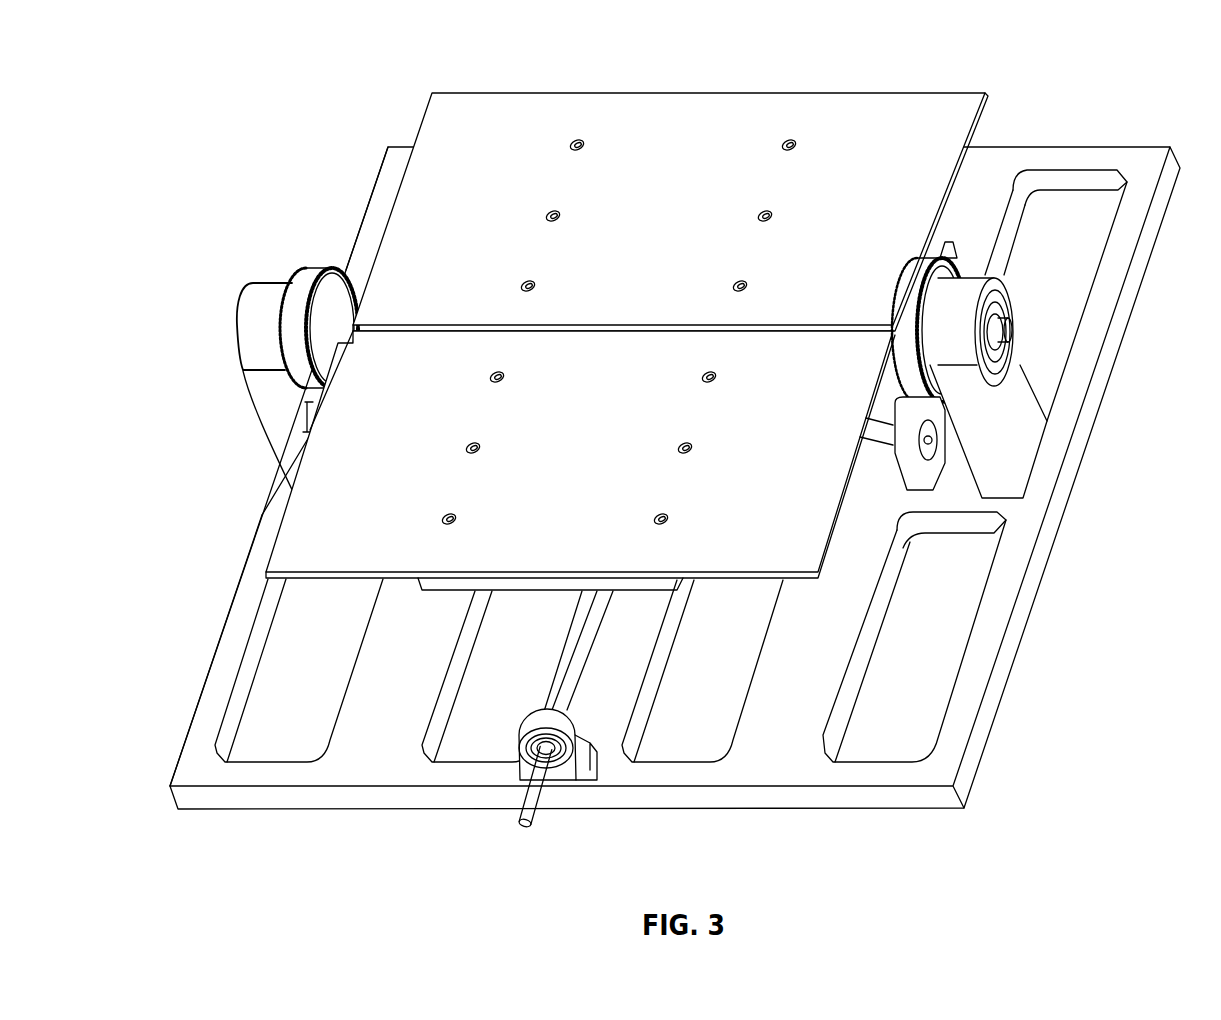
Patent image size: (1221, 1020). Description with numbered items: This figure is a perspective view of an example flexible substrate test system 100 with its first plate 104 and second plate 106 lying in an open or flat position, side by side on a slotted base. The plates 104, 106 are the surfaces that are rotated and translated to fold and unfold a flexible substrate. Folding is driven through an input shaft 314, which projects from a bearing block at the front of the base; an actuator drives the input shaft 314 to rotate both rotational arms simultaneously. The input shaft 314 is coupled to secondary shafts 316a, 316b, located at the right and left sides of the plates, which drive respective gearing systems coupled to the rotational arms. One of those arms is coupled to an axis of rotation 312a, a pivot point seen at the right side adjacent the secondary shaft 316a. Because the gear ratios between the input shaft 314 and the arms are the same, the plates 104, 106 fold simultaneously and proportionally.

The flexible substrate test system 100 is at (303, 51).
The first plate 104 is at (986, 92).
The second plate 106 is at (277, 546).
The axis of rotation 312a is at (1011, 328).
The input shaft 314 is at (523, 830).
The secondary shaft 316a is at (892, 253).
The secondary shaft 316b is at (284, 261).